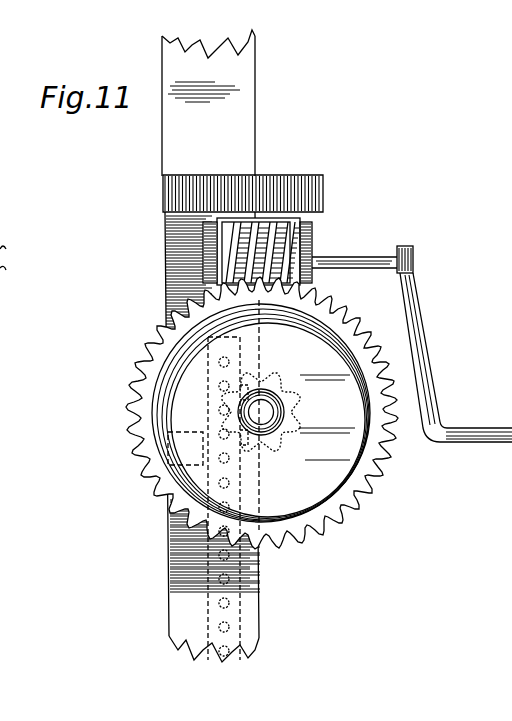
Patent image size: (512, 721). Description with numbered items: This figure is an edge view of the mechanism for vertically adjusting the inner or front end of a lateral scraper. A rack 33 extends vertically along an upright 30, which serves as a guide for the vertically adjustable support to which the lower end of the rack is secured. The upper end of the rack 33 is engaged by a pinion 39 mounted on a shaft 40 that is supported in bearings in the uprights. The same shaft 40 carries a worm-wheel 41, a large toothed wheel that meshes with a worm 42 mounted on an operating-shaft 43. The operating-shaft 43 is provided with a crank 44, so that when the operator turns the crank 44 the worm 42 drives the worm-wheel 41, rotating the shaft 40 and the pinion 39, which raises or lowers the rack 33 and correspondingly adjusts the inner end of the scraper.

The upright 30 is at (245, 132).
The worm 42 is at (217, 251).
The operating-shaft 43 is at (348, 257).
The crank 44 is at (428, 360).
The worm-wheel 41 is at (390, 465).
The pinion 39 is at (287, 401).
The shaft 40 is at (266, 417).
The rack 33 is at (240, 618).